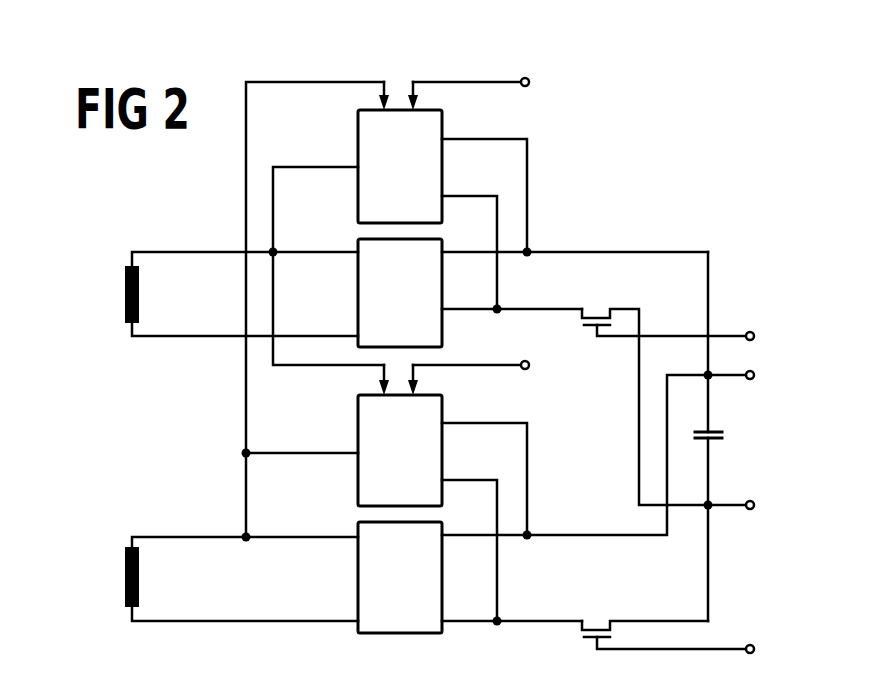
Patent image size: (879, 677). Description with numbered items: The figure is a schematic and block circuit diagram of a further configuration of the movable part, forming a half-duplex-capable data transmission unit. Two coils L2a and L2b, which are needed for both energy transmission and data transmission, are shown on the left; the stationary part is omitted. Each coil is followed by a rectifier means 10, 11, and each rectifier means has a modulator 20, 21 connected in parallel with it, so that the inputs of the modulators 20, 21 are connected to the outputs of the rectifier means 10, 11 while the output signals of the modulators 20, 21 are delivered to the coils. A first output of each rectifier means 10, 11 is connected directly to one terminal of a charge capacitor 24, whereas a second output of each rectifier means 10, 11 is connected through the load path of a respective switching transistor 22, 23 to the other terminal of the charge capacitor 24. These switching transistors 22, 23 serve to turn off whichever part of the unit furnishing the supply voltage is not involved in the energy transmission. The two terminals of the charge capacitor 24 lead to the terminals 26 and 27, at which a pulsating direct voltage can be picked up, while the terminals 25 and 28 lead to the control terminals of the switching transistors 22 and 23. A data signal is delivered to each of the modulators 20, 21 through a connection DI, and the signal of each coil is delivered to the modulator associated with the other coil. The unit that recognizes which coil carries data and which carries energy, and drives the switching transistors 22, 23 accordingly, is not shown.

The modulator unit 20 is at (442, 209).
The rectifier means 10 is at (533, 293).
The modulator unit 21 is at (442, 508).
The rectifier means 11 is at (533, 504).
The switching transistor 22 is at (645, 388).
The switching transistor 23 is at (645, 606).
The charge capacitor 24 is at (725, 437).
The terminal 25 is at (690, 336).
The terminal 26 is at (744, 375).
The terminal 27 is at (745, 504).
The terminal 28 is at (691, 648).
The coil L2a is at (218, 294).
The coil L2b is at (218, 579).
The connection DI is at (488, 222).